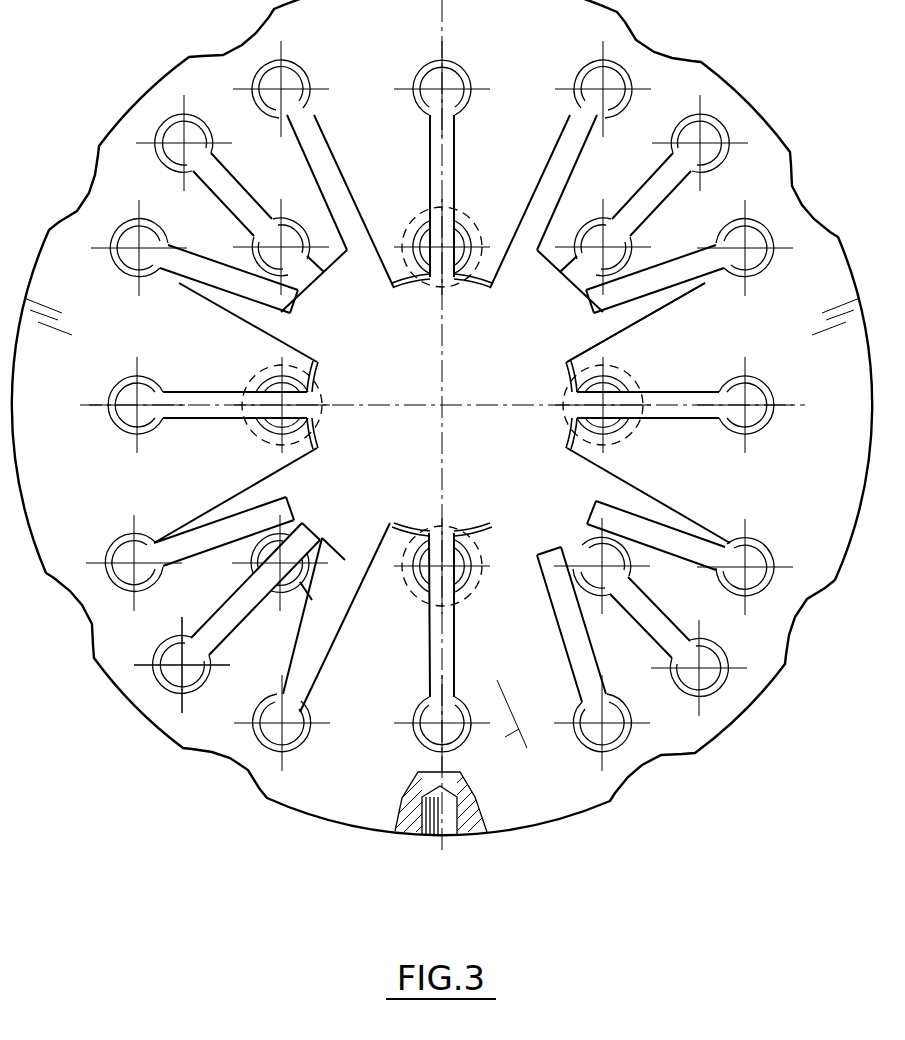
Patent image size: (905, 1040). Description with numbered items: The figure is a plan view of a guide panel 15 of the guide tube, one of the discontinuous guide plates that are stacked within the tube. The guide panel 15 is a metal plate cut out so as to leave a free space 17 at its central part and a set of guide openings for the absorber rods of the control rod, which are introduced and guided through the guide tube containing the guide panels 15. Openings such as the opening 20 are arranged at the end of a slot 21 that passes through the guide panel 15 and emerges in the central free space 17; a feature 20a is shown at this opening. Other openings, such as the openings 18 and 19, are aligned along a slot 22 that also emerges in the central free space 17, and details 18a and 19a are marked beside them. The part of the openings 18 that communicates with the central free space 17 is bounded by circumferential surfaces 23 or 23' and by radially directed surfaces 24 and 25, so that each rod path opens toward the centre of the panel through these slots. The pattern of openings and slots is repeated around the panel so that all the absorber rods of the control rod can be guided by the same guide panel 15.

The guide panel 15 is at (560, 853).
The free space 17 is at (442, 425).
The guide opening 18 is at (287, 560).
The bore counterbore 18a is at (305, 583).
The guide opening 19 is at (185, 665).
The hole axis 19a is at (182, 640).
The guide opening 20 is at (127, 568).
The hole outer wall 20a is at (128, 545).
The slot 21 is at (203, 525).
The slot 22 is at (240, 608).
The circumferential surface 23 is at (616, 522).
The circumferential surface 23' is at (589, 366).
The radially directed surface 24 is at (565, 538).
The radially directed surface 25 is at (795, 497).